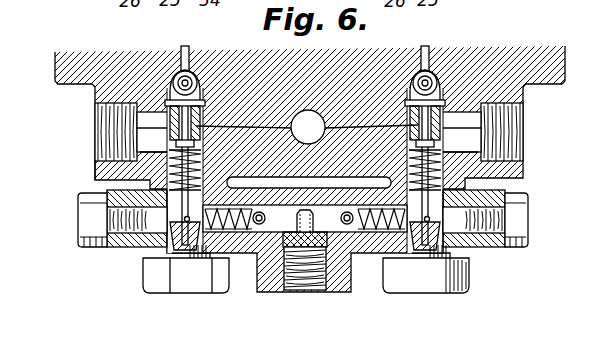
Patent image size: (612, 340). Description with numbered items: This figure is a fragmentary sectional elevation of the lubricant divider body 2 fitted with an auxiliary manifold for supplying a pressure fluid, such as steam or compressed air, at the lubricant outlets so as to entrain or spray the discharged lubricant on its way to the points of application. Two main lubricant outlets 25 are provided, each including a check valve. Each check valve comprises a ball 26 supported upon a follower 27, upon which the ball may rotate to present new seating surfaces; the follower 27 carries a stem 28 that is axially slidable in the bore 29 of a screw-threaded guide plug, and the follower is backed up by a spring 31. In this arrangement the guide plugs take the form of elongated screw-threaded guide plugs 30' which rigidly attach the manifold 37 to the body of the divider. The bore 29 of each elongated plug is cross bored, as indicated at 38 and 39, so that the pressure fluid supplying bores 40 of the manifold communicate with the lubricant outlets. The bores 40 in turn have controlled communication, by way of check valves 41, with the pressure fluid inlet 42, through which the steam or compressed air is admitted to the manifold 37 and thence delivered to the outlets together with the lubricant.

The valve body 2 is at (522, 53).
The main lubricant outlet 25 is at (186, 47).
The ball 26 is at (194, 72).
The follower 27 is at (170, 97).
The stem 28 is at (180, 119).
The bore 29 is at (118, 166).
The elongated screw-threaded guide plug 30' is at (306, 291).
The spring 31 is at (307, 127).
The manifold 37 is at (228, 268).
The cross bore 38 is at (176, 224).
The cross bore 39 is at (180, 142).
The pressure fluid supplying bore 40 is at (126, 246).
The check valve 41 is at (256, 224).
The pressure fluid inlet 42 is at (314, 288).